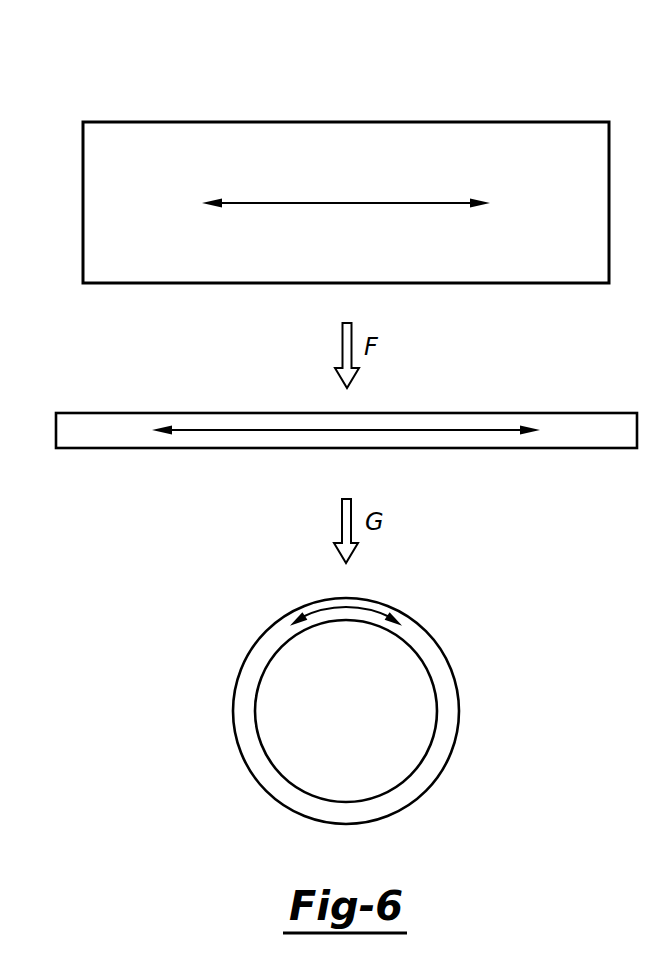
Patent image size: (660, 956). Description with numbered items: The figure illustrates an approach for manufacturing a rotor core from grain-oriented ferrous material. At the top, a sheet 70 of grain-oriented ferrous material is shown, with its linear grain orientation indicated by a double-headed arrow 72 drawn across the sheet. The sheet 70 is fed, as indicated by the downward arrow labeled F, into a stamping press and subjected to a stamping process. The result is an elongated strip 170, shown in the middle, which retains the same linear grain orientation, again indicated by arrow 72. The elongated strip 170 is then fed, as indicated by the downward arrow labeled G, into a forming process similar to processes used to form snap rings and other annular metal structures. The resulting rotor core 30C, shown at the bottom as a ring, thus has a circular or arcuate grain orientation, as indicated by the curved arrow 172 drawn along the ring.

The sheet 70 is at (347, 122).
The arrow indicating linear grain orientation 72 is at (346, 203).
The elongated strip 170 is at (249, 430).
The arrow indicating circular or arcuate grain orientation 172 is at (346, 608).
The rotor core 30C is at (466, 630).